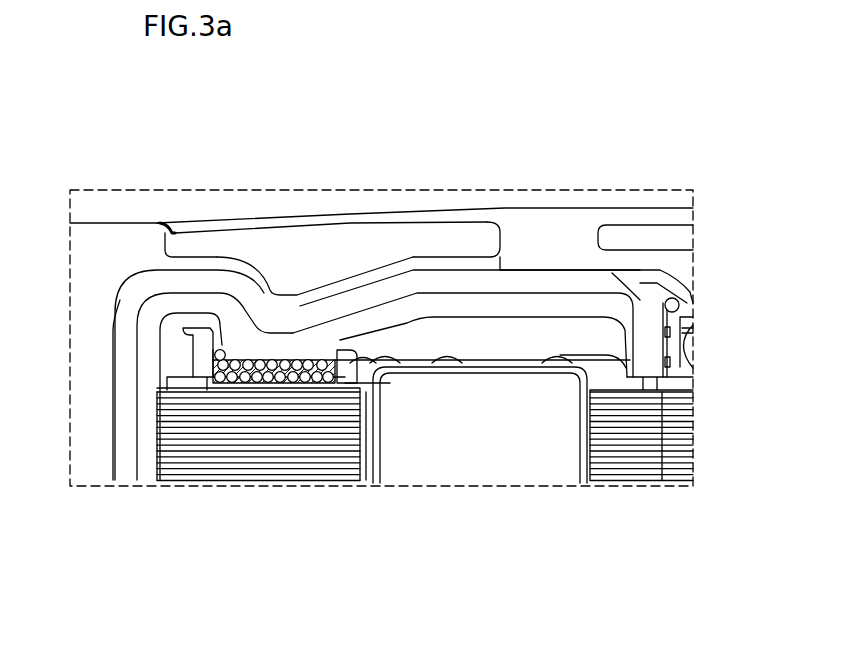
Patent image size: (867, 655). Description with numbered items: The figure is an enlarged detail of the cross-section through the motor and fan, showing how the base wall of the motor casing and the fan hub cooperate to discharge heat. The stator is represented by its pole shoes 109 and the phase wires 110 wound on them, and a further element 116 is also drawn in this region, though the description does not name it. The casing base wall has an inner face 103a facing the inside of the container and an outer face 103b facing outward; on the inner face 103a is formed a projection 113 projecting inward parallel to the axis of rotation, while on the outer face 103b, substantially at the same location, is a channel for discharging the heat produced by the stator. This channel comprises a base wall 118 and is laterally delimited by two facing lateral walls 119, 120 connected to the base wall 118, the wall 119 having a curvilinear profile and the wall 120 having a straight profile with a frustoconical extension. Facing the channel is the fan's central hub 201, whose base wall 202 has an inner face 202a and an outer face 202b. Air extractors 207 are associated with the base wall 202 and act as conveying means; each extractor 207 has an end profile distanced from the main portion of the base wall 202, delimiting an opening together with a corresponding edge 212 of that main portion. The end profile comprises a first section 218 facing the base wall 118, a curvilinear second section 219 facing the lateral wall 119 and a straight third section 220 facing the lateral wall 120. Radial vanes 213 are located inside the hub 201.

The central hub 201 is at (657, 205).
The base wall 202 is at (612, 273).
The inner face 202a is at (683, 303).
The outer face 202b is at (574, 206).
The edge 212 is at (188, 224).
The lateral wall 119 is at (229, 295).
The base wall 118 is at (298, 378).
The lateral wall 120 is at (300, 383).
The inner cover wall 116 is at (253, 300).
The third section 220 is at (372, 294).
The outer face 103b is at (482, 288).
The inner face 103a is at (489, 324).
The pole shoes 109 is at (168, 406).
The radial vanes 213 is at (97, 447).
The second section 219 is at (183, 330).
The projection 113 is at (260, 383).
The first section 218 is at (268, 378).
The phase wires 110 is at (310, 373).
The extractors 207 is at (312, 270).